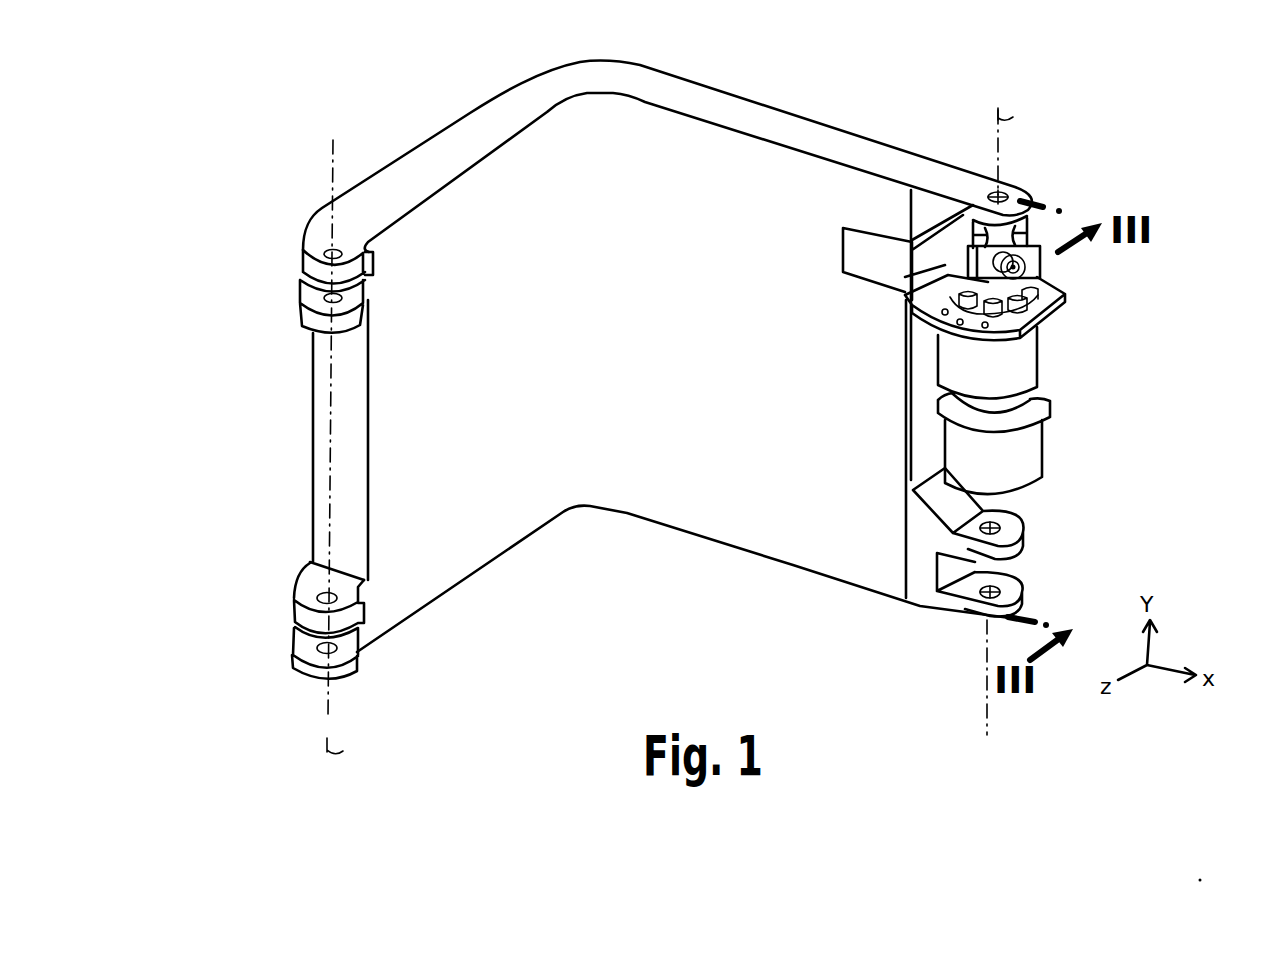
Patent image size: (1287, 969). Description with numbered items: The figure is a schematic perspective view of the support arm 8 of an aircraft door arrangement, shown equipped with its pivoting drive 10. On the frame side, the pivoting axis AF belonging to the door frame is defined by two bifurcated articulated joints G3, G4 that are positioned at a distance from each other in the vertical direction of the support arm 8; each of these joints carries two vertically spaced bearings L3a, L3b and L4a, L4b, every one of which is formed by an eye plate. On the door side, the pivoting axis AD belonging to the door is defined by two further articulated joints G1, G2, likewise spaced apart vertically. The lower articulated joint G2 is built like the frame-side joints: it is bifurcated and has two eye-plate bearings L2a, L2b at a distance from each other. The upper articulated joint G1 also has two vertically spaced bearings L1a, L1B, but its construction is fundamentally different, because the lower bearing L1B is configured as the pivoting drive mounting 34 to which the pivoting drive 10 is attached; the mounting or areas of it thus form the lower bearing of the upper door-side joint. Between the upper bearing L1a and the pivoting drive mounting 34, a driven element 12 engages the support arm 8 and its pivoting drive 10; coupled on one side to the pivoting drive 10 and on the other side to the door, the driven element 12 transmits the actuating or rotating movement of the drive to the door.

The support arm 8 is at (460, 212).
The pivoting drive 10 is at (983, 463).
The driven element 12 is at (1010, 340).
The pivoting drive mounting 34 is at (862, 255).
The pivoting axis on the door side AD is at (1026, 120).
The pivoting axis on the frame side AF is at (351, 754).
The upper articulated joint G1 is at (1109, 268).
The upper bearing L1a is at (1030, 221).
The lower bearing L1B is at (1058, 288).
The lower articulated joint G2 is at (1024, 542).
The bearing L2a is at (1017, 545).
The bearing L2b is at (1013, 603).
The articulated joint G3 is at (275, 291).
The bearing L3a is at (312, 251).
The bearing L3b is at (304, 306).
The articulated joint G4 is at (267, 624).
The bearing L4a is at (294, 613).
The bearing L4b is at (294, 657).